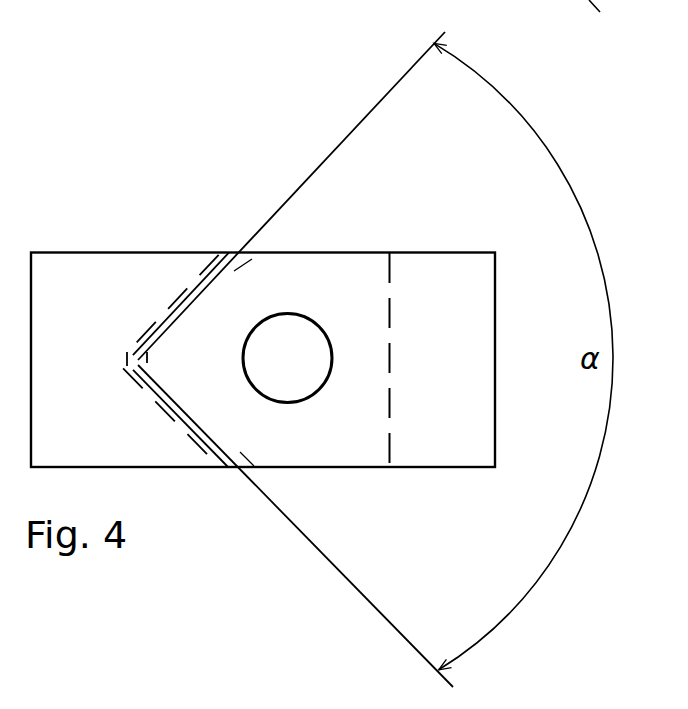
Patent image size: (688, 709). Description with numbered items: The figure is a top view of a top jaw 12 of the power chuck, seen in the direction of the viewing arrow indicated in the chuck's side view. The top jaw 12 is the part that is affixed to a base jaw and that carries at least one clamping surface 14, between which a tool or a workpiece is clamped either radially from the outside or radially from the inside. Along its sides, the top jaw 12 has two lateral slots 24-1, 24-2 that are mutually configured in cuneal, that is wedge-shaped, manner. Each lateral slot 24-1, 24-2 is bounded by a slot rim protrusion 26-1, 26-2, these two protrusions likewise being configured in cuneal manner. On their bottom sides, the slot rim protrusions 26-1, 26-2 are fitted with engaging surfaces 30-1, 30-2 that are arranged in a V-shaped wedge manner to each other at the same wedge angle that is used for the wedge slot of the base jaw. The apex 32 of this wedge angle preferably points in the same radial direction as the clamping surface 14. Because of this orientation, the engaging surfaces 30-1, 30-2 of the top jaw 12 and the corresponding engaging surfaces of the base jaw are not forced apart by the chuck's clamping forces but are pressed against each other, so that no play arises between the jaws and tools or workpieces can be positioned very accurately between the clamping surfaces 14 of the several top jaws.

The top jaw 12 is at (93, 268).
The clamping surface 14 is at (390, 318).
The lateral slot 24-1 is at (186, 408).
The lateral slot 24-2 is at (184, 303).
The slot rim protrusion 26-1 is at (240, 452).
The slot rim protrusion 26-2 is at (234, 271).
The engaging surface 30-1 is at (184, 413).
The engaging surface 30-2 is at (195, 288).
The apex 32 is at (137, 360).